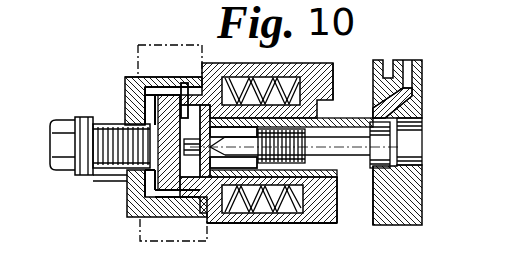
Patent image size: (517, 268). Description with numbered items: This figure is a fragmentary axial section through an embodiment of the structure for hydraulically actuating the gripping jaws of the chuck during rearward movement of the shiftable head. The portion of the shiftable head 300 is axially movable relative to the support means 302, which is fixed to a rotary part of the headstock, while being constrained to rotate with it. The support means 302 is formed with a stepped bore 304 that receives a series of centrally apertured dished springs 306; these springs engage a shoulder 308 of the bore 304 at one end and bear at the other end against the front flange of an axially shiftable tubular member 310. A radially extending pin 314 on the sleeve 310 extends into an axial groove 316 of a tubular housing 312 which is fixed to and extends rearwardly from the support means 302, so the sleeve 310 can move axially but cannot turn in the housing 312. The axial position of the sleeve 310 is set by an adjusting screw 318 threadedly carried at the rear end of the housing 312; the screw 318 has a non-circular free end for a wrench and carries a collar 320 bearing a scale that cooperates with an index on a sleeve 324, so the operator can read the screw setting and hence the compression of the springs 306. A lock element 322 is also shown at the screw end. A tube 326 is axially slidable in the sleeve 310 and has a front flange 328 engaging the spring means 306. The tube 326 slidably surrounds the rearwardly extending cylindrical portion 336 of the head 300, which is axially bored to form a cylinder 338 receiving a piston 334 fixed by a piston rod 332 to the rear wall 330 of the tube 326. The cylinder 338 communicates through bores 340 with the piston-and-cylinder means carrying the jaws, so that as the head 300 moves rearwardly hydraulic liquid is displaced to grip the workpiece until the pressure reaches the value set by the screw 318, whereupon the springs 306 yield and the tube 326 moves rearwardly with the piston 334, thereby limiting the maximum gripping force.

The shiftable head 300 is at (423, 110).
The support means 302 is at (327, 63).
The stepped bore 304 is at (290, 214).
The dished springs 306 is at (287, 77).
The shoulder 308 is at (333, 72).
The tubular member 310 is at (233, 224).
The tubular housing 312 is at (125, 78).
The radially extending pin 314 is at (175, 88).
The axial groove 316 is at (197, 84).
The adjusting screw 318 is at (100, 117).
The collar 320 is at (67, 128).
The lock ring 322 is at (97, 187).
The sleeve 324 is at (97, 181).
The tube 326 is at (140, 221).
The front flange 328 is at (313, 110).
The rear wall 330 is at (125, 97).
The piston rod 332 is at (128, 197).
The piston 334 is at (337, 224).
The cylindrical portion 336 is at (350, 172).
The cylinder 338 is at (413, 88).
The bores 340 is at (423, 97).